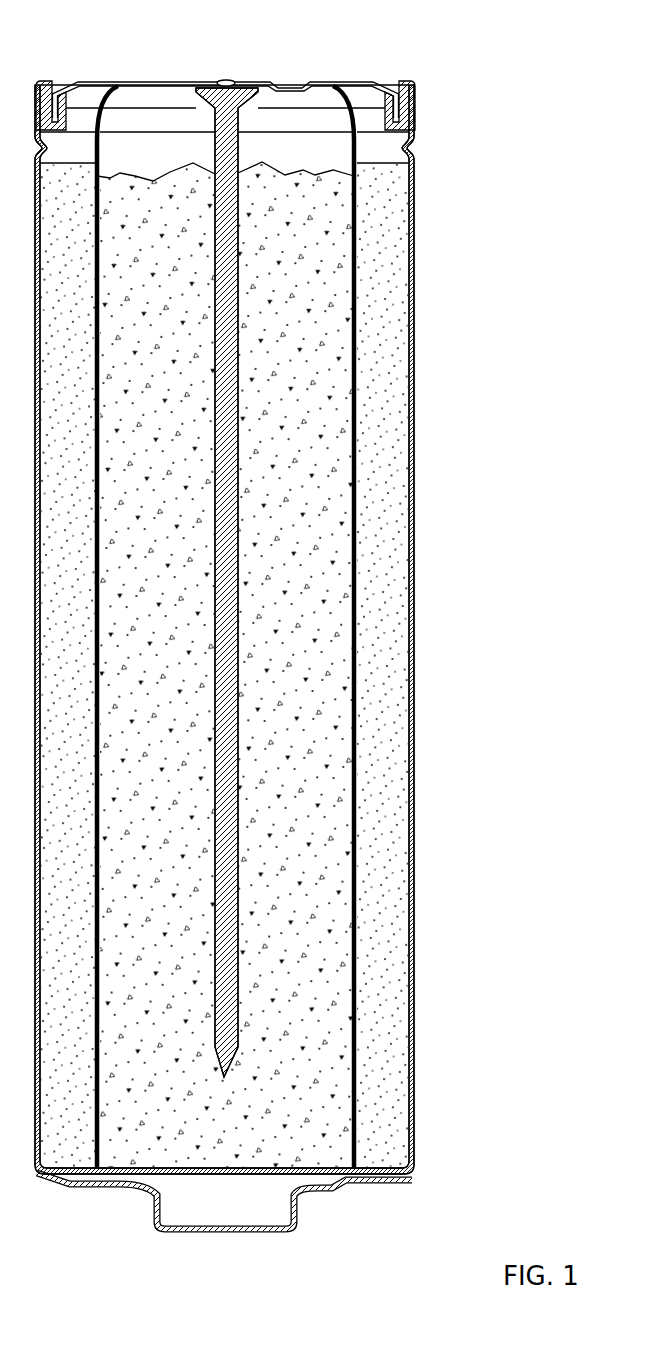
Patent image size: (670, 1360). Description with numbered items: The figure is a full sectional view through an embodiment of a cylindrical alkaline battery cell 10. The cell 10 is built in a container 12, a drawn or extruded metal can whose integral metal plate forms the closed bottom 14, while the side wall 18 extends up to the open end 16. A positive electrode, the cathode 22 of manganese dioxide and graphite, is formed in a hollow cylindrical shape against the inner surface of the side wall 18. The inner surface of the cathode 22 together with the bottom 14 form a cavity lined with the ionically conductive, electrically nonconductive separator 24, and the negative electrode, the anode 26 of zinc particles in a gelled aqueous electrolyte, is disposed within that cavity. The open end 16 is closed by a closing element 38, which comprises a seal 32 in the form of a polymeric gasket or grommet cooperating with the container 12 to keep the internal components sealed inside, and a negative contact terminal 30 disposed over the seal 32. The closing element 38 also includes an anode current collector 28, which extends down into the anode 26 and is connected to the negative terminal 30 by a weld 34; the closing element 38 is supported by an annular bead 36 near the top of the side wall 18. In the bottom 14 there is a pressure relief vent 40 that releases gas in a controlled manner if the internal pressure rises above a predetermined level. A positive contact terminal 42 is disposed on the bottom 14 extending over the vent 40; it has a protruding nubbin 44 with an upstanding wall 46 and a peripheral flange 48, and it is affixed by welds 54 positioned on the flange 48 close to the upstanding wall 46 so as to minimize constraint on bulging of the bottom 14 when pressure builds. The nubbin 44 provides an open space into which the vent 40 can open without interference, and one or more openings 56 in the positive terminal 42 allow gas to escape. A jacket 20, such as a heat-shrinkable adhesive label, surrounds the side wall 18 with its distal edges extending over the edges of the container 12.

The cell 10 is at (505, 102).
The container 12 is at (415, 290).
The bottom 14 is at (178, 1182).
The open end 16 is at (383, 70).
The side wall 18 is at (415, 503).
The jacket 20 is at (417, 1092).
The positive electrode (cathode) 22 is at (387, 363).
The separator 24 is at (355, 418).
The negative electrode (anode) 26 is at (333, 958).
The anode current collector 28 is at (238, 1012).
The negative contact terminal 30 is at (172, 82).
The seal 32 is at (413, 110).
The weld 34 is at (226, 82).
The annular bead 36 is at (412, 150).
The closing element 38 is at (57, 72).
The pressure relief vent 40 is at (265, 1172).
The positive contact terminal 42 is at (150, 1221).
The nubbin 44 is at (207, 1233).
The upstanding wall 46 is at (302, 1195).
The peripheral flange 48 is at (367, 1186).
The welds 54 is at (85, 1188).
The openings 56 is at (298, 1208).